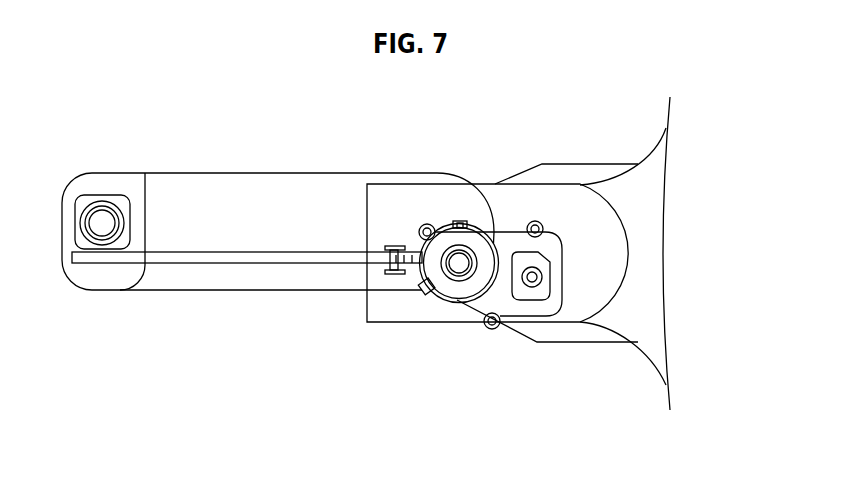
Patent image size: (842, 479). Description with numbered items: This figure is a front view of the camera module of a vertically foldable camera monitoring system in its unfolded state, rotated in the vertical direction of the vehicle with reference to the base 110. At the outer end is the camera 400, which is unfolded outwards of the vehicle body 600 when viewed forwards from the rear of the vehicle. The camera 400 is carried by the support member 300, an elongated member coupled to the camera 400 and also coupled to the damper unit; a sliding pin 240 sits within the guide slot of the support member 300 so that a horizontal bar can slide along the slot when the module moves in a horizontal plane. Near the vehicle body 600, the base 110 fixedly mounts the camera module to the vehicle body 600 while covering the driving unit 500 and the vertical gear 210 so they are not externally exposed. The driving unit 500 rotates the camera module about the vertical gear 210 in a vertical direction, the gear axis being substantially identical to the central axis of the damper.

The base 110 is at (610, 330).
The vertical gear 210 is at (458, 268).
The sliding pin 240 is at (393, 245).
The support member 300 is at (223, 257).
The camera 400 is at (98, 200).
The driving unit 500 is at (533, 292).
The vehicle body 600 is at (665, 180).